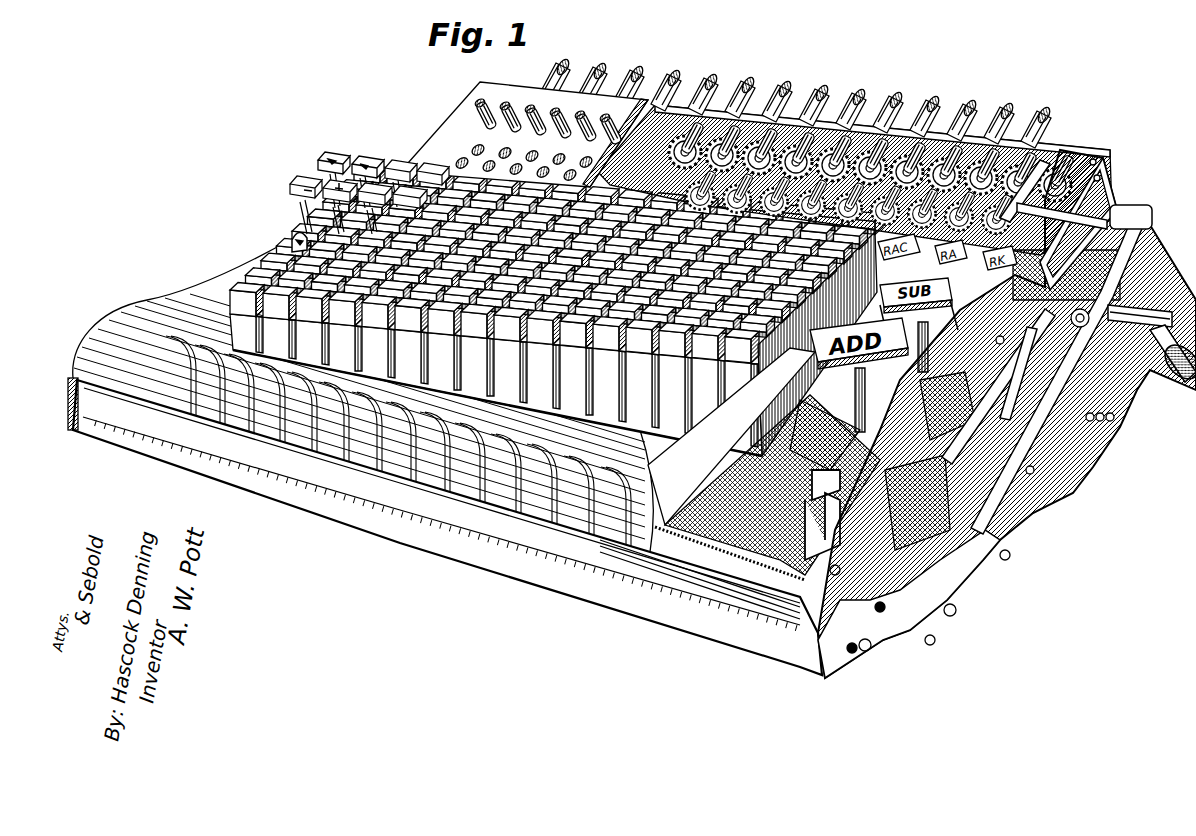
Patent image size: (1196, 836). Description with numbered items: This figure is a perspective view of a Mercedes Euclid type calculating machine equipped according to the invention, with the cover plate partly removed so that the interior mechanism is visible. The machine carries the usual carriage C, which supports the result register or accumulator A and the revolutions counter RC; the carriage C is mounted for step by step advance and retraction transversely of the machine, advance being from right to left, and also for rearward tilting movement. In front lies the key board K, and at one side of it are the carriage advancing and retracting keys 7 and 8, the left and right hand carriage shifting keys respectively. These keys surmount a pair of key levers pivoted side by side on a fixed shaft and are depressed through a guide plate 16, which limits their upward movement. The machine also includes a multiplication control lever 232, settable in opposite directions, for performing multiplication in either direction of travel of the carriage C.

The guide plate 16 is at (150, 300).
The key board K is at (245, 270).
The multiplication control lever 232 is at (298, 237).
The carriage advancing key 7 is at (330, 158).
The carriage retracting key 8 is at (365, 160).
The result register A is at (460, 160).
The revolutions counter RC is at (780, 95).
The carriage C is at (1065, 165).